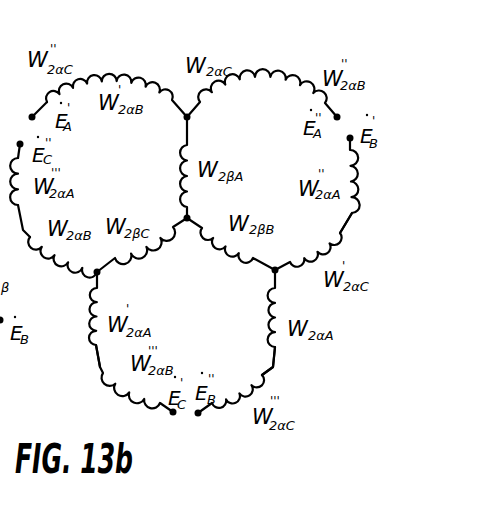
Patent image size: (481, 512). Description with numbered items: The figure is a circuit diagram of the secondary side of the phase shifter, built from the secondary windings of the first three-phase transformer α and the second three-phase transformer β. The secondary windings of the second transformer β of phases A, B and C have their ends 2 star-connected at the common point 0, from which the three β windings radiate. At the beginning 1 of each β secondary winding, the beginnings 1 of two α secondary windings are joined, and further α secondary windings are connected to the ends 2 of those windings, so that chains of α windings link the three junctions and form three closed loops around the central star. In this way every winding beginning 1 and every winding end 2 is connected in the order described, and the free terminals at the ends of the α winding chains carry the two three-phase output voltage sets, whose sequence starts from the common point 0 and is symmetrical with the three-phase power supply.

The winding beginning 1 is at (177, 261).
The winding end 2 is at (187, 218).
The common point 0 is at (186, 235).